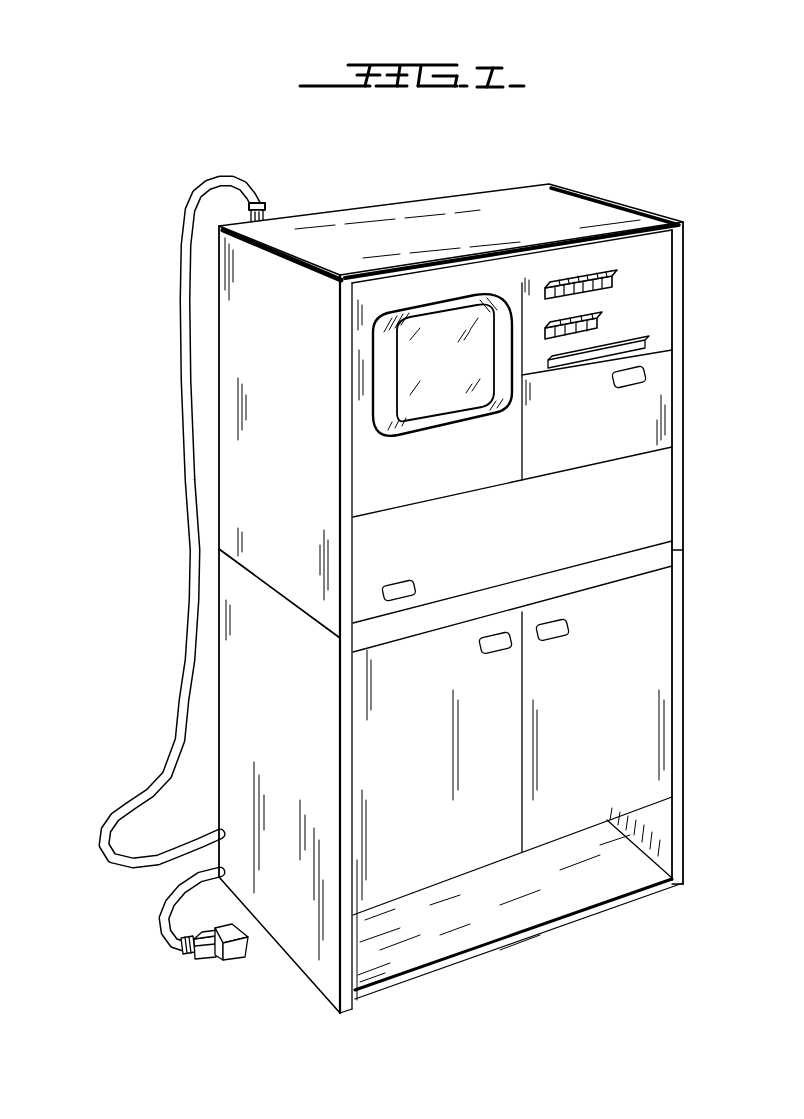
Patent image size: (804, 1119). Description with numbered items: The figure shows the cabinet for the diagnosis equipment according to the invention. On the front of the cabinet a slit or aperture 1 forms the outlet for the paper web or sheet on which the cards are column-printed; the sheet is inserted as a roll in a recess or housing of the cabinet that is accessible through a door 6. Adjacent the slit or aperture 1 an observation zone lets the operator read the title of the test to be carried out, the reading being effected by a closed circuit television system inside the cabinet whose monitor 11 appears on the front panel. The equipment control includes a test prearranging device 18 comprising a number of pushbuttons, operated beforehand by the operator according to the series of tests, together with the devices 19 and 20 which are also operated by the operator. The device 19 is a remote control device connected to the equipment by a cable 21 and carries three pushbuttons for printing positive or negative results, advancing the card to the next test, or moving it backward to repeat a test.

The slit or aperture 1 is at (644, 344).
The door 6 is at (653, 413).
The monitor 11 is at (442, 390).
The test prearranging device 18 is at (568, 282).
The remote control device 19 is at (228, 958).
The device 20 is at (600, 323).
The cable 21 is at (100, 842).